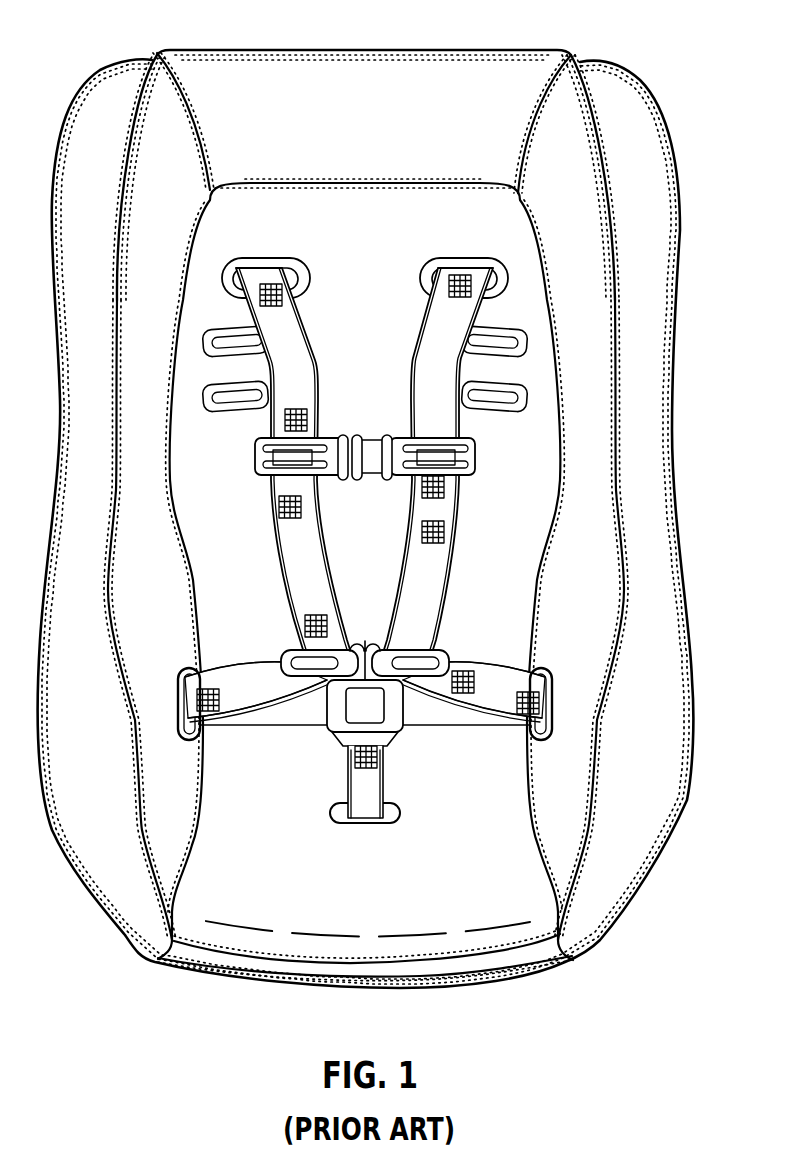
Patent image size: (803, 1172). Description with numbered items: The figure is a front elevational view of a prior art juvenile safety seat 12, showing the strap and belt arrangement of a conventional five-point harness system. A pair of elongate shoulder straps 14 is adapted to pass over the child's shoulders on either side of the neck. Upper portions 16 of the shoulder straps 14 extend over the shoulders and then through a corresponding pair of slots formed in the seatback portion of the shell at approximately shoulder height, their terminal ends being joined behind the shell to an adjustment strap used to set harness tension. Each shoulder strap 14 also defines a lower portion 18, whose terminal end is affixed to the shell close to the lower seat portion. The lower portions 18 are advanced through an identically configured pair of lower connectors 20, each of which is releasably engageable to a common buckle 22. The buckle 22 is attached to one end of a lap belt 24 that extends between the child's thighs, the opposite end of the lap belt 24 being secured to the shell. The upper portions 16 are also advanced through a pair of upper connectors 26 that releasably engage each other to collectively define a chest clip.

The safety seat 12 is at (655, 81).
The shoulder straps 14 is at (365, 443).
The upper portions 16 is at (297, 343).
The lower portions 18 is at (228, 685).
The lower connectors 20 is at (354, 641).
The buckle 22 is at (392, 725).
The lap belt 24 is at (371, 787).
The upper connectors 26 is at (397, 450).